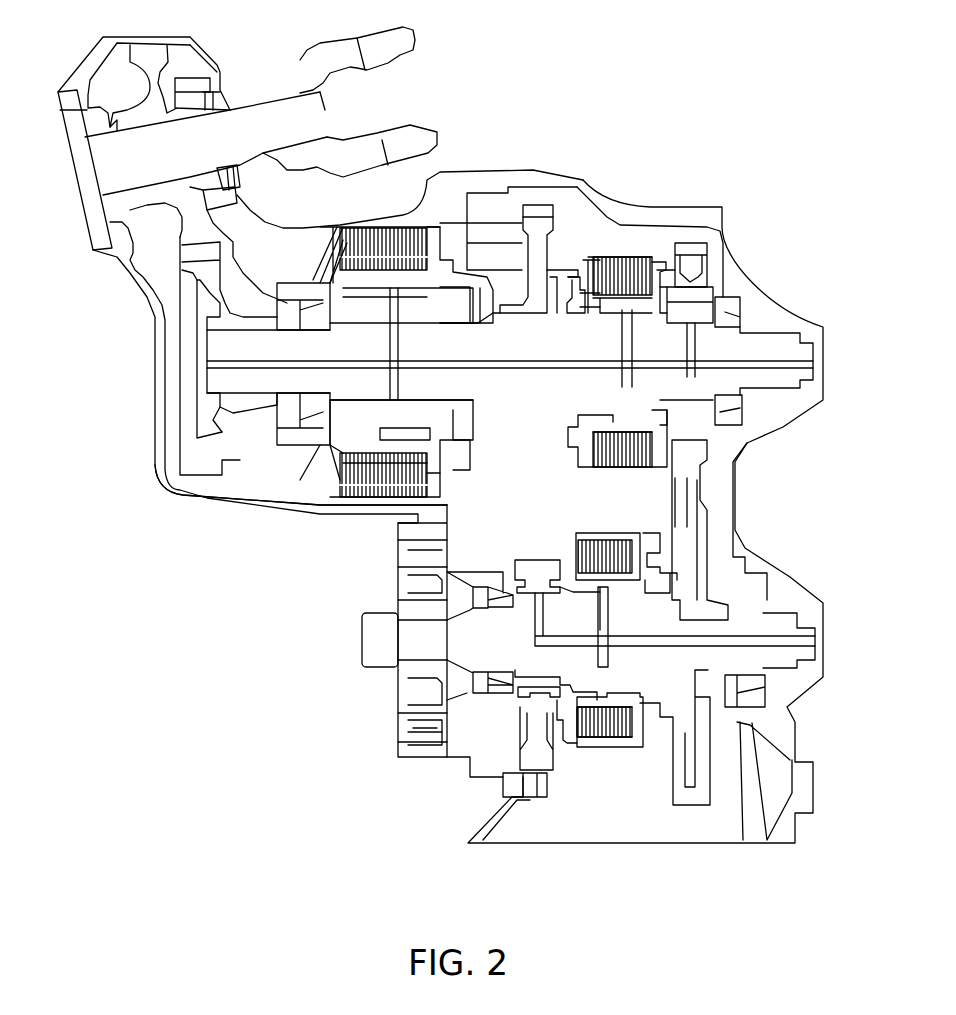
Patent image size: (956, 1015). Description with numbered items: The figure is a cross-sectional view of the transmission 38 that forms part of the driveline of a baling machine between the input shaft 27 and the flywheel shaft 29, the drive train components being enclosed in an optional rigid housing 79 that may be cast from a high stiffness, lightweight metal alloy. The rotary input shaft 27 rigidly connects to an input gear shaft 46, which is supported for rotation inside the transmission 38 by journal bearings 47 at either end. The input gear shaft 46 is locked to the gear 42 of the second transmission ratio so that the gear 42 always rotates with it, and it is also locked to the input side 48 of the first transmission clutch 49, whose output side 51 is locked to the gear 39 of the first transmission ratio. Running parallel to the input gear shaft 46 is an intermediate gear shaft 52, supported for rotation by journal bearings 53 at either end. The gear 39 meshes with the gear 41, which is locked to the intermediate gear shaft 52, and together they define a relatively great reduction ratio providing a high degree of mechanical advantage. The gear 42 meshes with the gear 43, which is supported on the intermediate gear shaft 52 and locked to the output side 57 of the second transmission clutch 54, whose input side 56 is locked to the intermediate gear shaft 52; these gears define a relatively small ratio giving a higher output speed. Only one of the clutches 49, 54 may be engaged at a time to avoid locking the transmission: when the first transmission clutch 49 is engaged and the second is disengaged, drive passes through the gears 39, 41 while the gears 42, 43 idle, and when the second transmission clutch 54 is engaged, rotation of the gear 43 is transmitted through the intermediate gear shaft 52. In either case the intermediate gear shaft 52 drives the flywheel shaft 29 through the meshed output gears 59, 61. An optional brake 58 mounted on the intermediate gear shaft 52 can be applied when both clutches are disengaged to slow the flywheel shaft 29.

The flywheel shaft 29 is at (230, 110).
The output gear 61 is at (180, 237).
The housing 79 is at (140, 280).
The intermediate gear shaft 52 is at (217, 347).
The output gear 59 is at (193, 452).
The journal bearing 53 is at (308, 413).
The transmission 38 is at (257, 507).
The brake 58 is at (410, 230).
The gear 41 is at (535, 213).
The input side of second transmission clutch 56 is at (615, 253).
The second transmission clutch 54 is at (623, 260).
The output side of second transmission clutch 57 is at (658, 258).
The gear 43 is at (693, 263).
The gear 42 is at (687, 533).
The input gear shaft 46 is at (753, 613).
The input shaft 27 is at (373, 640).
The journal bearing 47 is at (413, 723).
The gear 39 is at (515, 750).
The output side of first transmission clutch 51 is at (565, 760).
The first transmission clutch 49 is at (567, 747).
The input side of first transmission clutch 48 is at (603, 745).